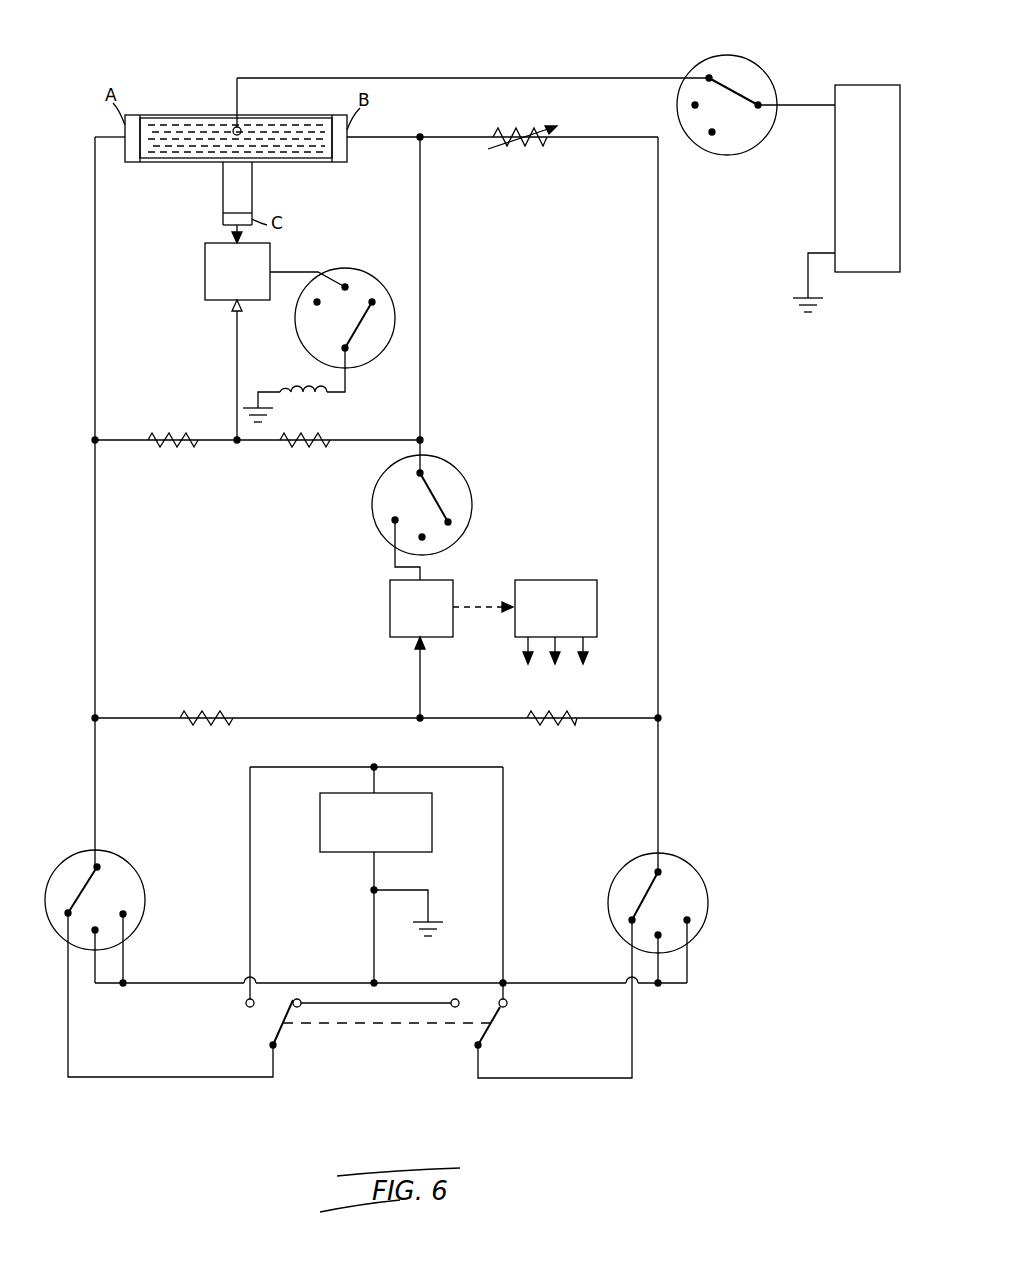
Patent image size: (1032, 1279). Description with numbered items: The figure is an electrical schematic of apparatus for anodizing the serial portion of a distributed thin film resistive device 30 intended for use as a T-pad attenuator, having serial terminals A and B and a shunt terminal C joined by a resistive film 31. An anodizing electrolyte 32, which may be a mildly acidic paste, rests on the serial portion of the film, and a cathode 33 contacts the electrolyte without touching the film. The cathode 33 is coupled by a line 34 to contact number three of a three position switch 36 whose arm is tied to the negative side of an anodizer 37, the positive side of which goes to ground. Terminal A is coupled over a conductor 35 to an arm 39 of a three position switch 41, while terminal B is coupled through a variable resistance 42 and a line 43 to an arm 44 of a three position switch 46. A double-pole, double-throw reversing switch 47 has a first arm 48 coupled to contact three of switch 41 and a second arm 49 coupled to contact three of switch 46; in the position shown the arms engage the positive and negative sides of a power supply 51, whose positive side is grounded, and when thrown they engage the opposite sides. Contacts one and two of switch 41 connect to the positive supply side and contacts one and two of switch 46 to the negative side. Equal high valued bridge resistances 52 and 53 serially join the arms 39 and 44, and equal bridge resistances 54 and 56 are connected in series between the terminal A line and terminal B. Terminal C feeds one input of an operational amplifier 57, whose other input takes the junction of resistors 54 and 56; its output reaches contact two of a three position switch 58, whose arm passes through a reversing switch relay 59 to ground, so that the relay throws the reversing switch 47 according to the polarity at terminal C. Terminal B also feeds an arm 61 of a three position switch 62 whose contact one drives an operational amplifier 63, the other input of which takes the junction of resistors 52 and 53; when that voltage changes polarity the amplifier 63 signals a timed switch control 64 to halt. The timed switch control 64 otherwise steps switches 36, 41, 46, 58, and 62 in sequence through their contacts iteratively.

The distributed thin film resistive device 30 is at (198, 186).
The resistive film 31 is at (232, 155).
The anodizing electrolyte 32 is at (300, 118).
The cathode 33 is at (240, 127).
The line 34 is at (483, 76).
The conductor 35 is at (95, 515).
The three position switch 36 is at (762, 66).
The anodizer 37 is at (835, 184).
The arm 39 is at (86, 871).
The three position switch 41 is at (134, 874).
The variable resistance 42 is at (512, 136).
The line 43 is at (658, 442).
The arm 44 is at (646, 887).
The three position switch 46 is at (688, 865).
The reversing switch 47 is at (362, 1082).
The first arm 48 is at (272, 1036).
The second arm 49 is at (498, 1020).
The power supply 51 is at (430, 814).
The bridge resistance 52 is at (208, 715).
The bridge resistance 53 is at (542, 716).
The bridge resistance 54 is at (179, 448).
The bridge resistance 56 is at (312, 448).
The operational amplifier 57 is at (193, 280).
The three position switch 58 is at (361, 270).
The reversing switch relay 59 is at (304, 388).
The arm 61 is at (424, 488).
The three position switch 62 is at (458, 478).
The operational amplifier 63 is at (390, 603).
The timed switch control 64 is at (578, 580).